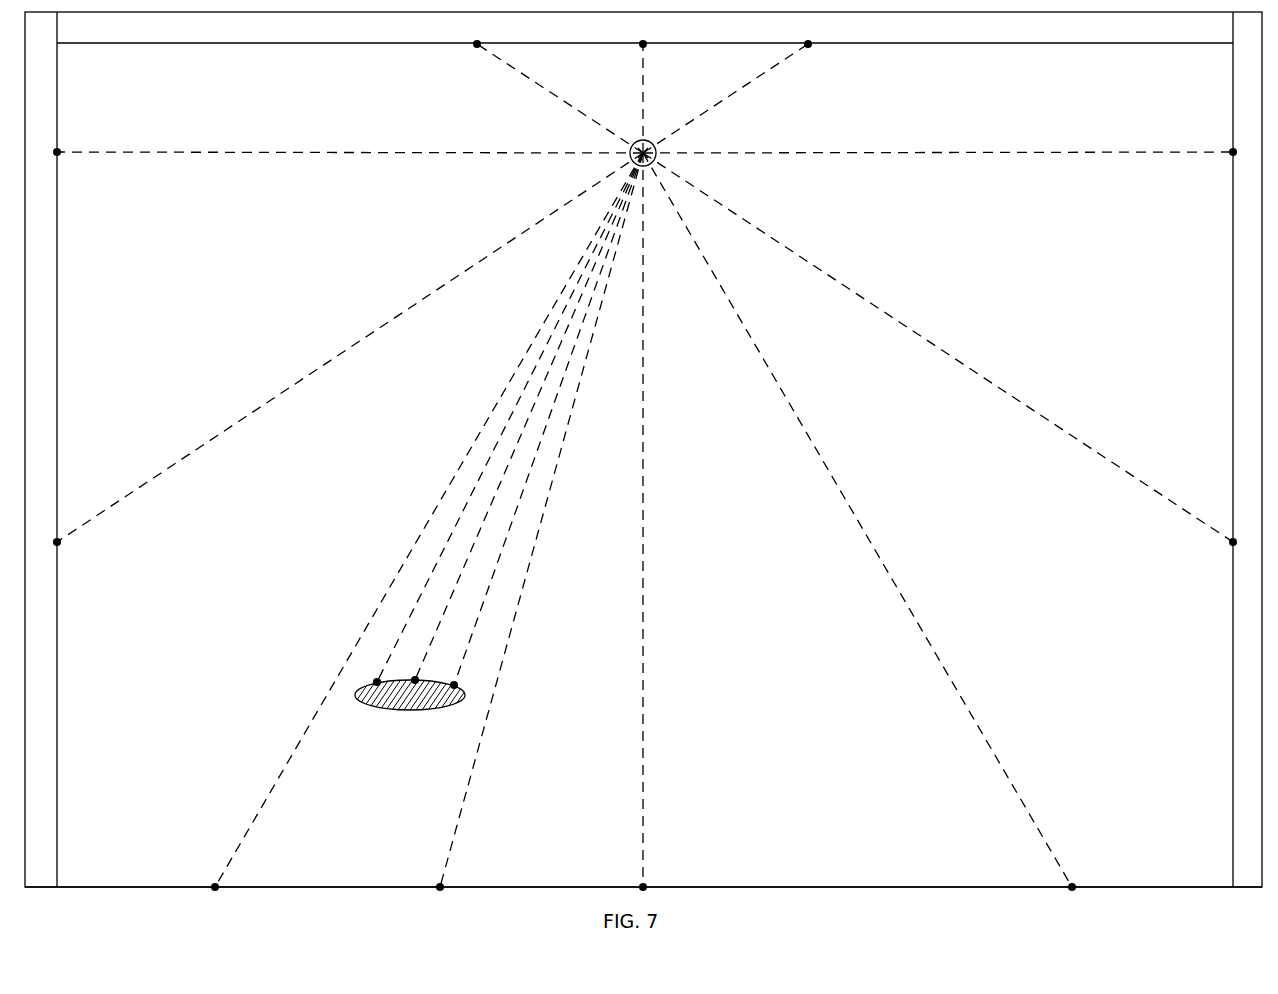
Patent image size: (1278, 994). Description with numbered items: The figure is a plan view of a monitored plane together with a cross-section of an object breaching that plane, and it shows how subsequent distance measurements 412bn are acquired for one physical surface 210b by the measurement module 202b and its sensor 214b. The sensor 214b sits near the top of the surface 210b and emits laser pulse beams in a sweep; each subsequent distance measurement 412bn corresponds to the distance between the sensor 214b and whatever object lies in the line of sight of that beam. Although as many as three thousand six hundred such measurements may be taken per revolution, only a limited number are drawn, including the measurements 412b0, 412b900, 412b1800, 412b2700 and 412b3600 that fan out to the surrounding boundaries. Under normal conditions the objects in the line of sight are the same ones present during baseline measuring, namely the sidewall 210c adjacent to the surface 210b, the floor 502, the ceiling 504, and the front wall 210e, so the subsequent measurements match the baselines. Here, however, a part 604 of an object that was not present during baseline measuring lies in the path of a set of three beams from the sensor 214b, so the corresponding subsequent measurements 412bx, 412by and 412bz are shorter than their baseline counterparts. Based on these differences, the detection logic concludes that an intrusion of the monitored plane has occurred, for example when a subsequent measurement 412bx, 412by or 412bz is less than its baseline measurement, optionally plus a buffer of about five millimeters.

The surface 210b is at (1102, 104).
The sidewall 210c is at (57, 303).
The front wall 210e is at (1233, 360).
The ceiling 504 is at (170, 43).
The floor 502 is at (837, 887).
The measurement module 202b is at (608, 142).
The sensor 214b is at (635, 160).
The subsequent distance measurement 412b3600 is at (642, 88).
The subsequent distance measurement 412b0 is at (645, 63).
The subsequent distance measurement 412b2700 is at (310, 158).
The subsequent distance measurement 412b900 is at (958, 155).
The subsequent distance measurements 412bn is at (308, 372).
The subsequent distance measurement 412b1800 is at (645, 565).
The subsequent measurement 412bz is at (393, 650).
The subsequent measurement 412by is at (447, 612).
The subsequent measurement 412bx is at (490, 588).
The part of an object 604 is at (400, 710).